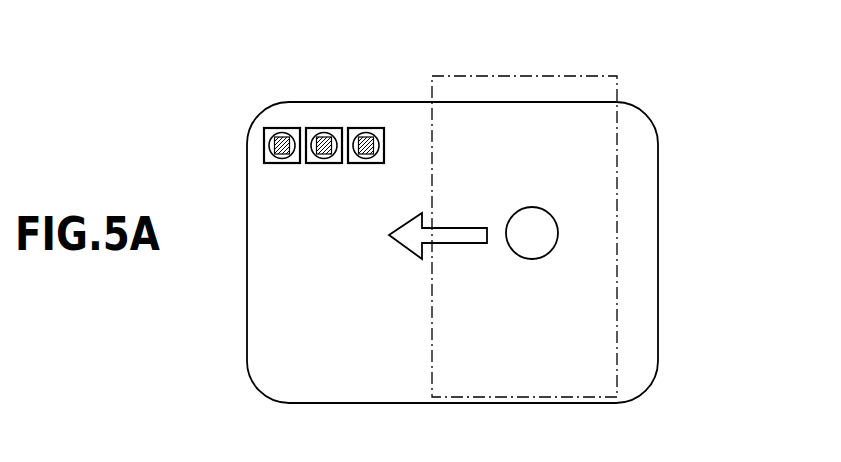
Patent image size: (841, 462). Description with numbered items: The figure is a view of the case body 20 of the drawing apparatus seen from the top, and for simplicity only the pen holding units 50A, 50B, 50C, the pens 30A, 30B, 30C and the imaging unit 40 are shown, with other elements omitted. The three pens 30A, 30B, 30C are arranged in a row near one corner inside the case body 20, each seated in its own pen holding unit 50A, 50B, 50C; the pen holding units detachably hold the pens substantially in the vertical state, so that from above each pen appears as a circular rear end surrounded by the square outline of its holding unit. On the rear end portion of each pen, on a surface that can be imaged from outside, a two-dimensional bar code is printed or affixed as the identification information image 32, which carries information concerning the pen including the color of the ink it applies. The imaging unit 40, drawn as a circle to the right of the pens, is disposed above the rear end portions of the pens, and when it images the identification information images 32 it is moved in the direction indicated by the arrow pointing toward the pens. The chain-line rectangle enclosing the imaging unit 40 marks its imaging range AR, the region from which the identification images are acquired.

The case body 20 is at (650, 70).
The imaging range AR is at (567, 76).
The imaging unit 40 is at (546, 230).
The identification information image 32 is at (265, 128).
The pen 30A is at (365, 128).
The pen 30B is at (327, 128).
The pen 30C is at (283, 128).
The pen holding unit 50A is at (365, 163).
The pen holding unit 50B is at (323, 163).
The pen holding unit 50C is at (280, 163).